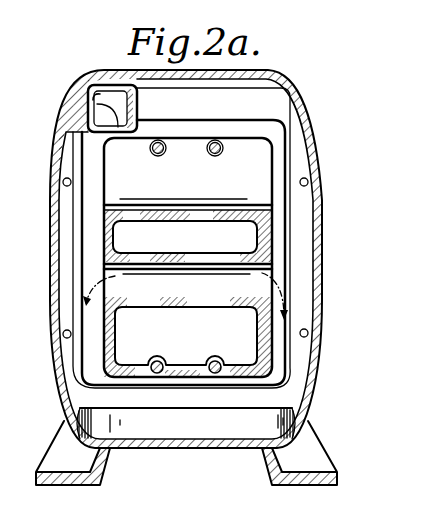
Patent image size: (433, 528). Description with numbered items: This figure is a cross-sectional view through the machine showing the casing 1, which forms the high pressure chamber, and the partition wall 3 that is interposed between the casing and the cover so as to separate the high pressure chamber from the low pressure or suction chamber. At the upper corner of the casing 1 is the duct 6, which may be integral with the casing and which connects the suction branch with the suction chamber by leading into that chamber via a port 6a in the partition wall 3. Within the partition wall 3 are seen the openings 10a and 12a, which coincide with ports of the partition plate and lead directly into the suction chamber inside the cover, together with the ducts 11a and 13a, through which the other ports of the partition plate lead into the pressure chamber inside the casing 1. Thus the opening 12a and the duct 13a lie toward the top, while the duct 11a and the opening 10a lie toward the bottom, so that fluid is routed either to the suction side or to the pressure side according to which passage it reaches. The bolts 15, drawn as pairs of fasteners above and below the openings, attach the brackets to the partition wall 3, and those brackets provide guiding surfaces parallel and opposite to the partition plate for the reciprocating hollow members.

The casing 1 is at (318, 333).
The partition wall 3 is at (275, 160).
The duct 6 is at (98, 106).
The port 6a is at (93, 97).
The opening 10a is at (245, 349).
The duct 11a is at (250, 274).
The opening 12a is at (235, 232).
The duct 13a is at (252, 191).
The bolts 15 is at (210, 156).